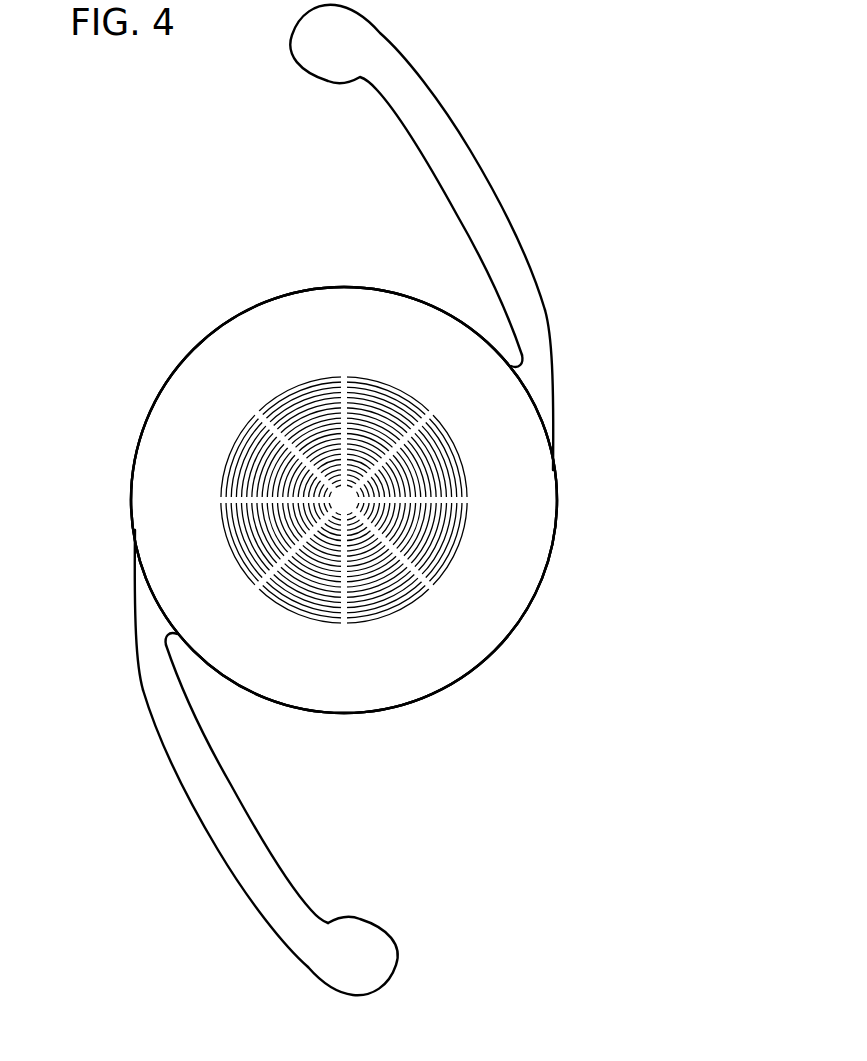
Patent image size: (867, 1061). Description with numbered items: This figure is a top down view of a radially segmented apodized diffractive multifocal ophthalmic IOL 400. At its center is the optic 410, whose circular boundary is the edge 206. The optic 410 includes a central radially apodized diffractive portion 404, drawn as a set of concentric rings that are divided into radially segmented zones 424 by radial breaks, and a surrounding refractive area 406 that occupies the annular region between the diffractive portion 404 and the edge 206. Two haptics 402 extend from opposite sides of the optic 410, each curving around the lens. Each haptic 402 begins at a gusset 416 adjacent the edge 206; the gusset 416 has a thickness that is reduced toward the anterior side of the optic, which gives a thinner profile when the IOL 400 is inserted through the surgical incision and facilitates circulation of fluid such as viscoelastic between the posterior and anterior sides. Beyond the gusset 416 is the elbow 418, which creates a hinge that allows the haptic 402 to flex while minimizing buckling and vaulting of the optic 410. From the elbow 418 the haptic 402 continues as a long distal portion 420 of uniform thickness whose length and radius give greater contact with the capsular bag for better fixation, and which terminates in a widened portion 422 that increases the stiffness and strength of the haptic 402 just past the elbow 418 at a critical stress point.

The radially segmented apodized diffractive multifocal ophthalmic IOL 400 is at (610, 178).
The edge of the optic 206 is at (490, 658).
The optic 410 is at (260, 303).
The surrounding refractive area 406 is at (207, 387).
The central radially apodized diffractive portion 404 is at (485, 537).
The radially segmented zones 424 is at (385, 377).
The haptics 402 is at (440, 98).
The gusset 416 is at (553, 380).
The distal portion 420 is at (222, 865).
The widened portion 422 is at (383, 925).
The elbow 418 is at (135, 630).